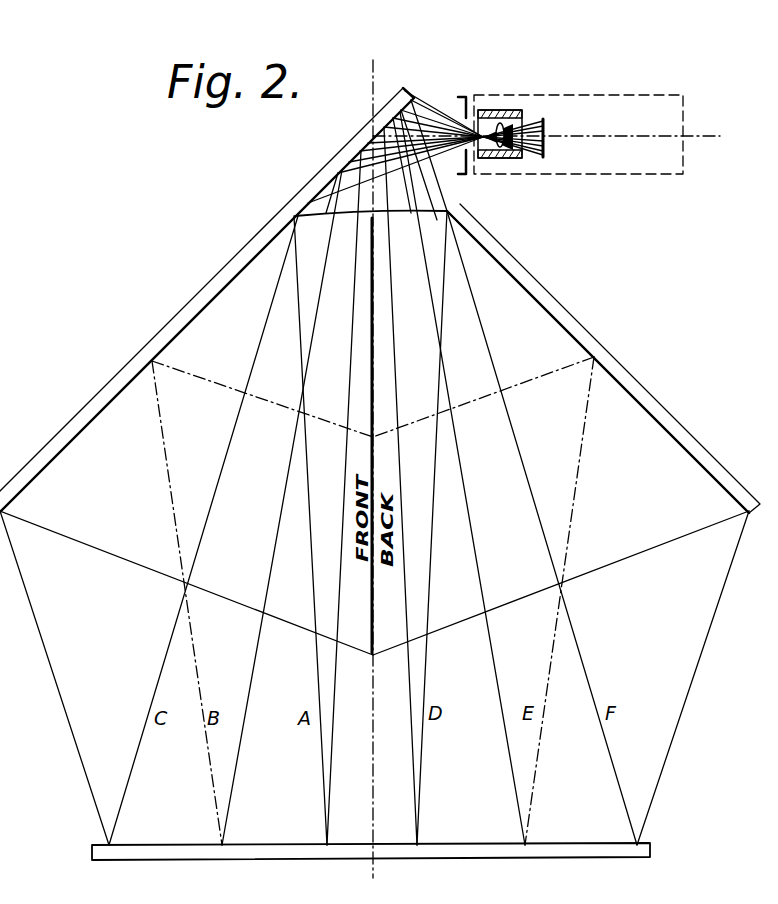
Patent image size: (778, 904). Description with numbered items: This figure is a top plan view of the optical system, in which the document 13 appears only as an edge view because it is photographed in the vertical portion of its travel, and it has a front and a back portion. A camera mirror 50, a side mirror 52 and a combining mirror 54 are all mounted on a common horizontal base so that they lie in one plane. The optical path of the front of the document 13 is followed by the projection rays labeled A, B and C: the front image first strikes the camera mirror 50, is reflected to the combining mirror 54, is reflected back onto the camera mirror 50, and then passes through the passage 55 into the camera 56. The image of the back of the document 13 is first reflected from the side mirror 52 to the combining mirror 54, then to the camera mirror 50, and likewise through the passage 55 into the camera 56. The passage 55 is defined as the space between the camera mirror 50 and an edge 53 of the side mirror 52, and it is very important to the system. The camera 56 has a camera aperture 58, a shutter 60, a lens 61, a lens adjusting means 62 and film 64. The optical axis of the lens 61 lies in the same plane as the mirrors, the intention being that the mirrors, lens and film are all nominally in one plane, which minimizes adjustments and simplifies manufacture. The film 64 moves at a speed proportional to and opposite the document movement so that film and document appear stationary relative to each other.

The document 13 is at (374, 657).
The camera mirror 50 is at (100, 398).
The side mirror 52 is at (591, 337).
The edge of side mirror 53 is at (448, 209).
The combining mirror 54 is at (598, 853).
The passage 55 is at (442, 169).
The camera 56 is at (581, 91).
The camera aperture 58 is at (460, 112).
The shutter 60 is at (532, 110).
The lens 61 is at (507, 148).
The lens adjusting means 62 is at (513, 153).
The film 64 is at (547, 143).